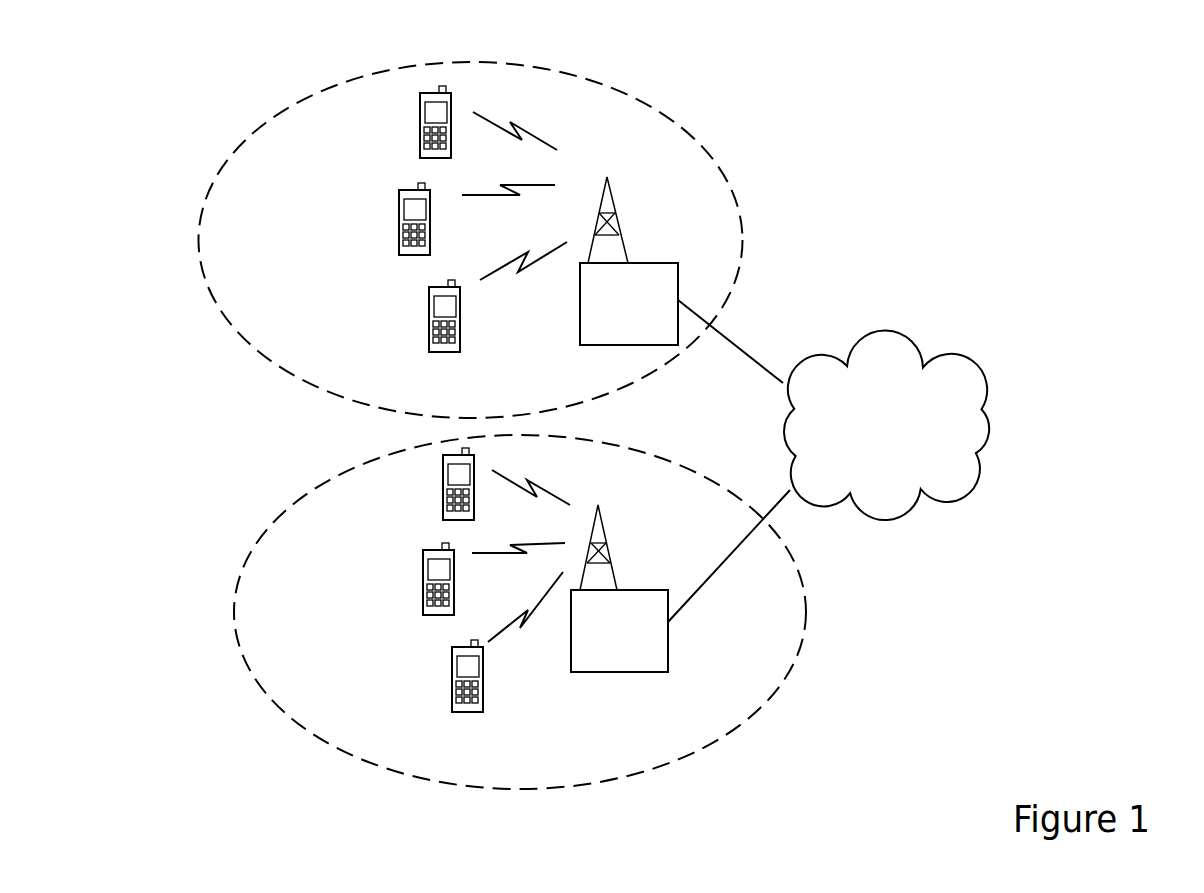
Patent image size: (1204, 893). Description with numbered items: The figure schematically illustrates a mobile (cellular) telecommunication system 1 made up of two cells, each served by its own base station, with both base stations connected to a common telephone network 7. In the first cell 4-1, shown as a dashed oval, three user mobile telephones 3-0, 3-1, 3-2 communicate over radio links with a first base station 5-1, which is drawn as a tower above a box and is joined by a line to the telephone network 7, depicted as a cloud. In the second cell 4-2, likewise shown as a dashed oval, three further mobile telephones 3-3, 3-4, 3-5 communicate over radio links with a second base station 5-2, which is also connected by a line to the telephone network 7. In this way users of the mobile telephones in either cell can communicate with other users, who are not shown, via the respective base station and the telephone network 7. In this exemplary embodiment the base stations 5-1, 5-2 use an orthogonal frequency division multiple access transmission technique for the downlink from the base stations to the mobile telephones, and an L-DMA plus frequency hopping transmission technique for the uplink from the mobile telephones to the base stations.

The mobile (cellular) telecommunication system 1 is at (928, 641).
The mobile telephone 3-0 is at (420, 150).
The mobile telephone 3-1 is at (399, 247).
The mobile telephone 3-2 is at (429, 340).
The mobile telephone 3-3 is at (443, 512).
The mobile telephone 3-4 is at (423, 605).
The mobile telephone 3-5 is at (452, 693).
The first cell 4-1 is at (690, 129).
The second cell 4-2 is at (775, 688).
The first base station 5-1 is at (658, 262).
The second base station 5-2 is at (648, 672).
The telephone network 7 is at (913, 342).